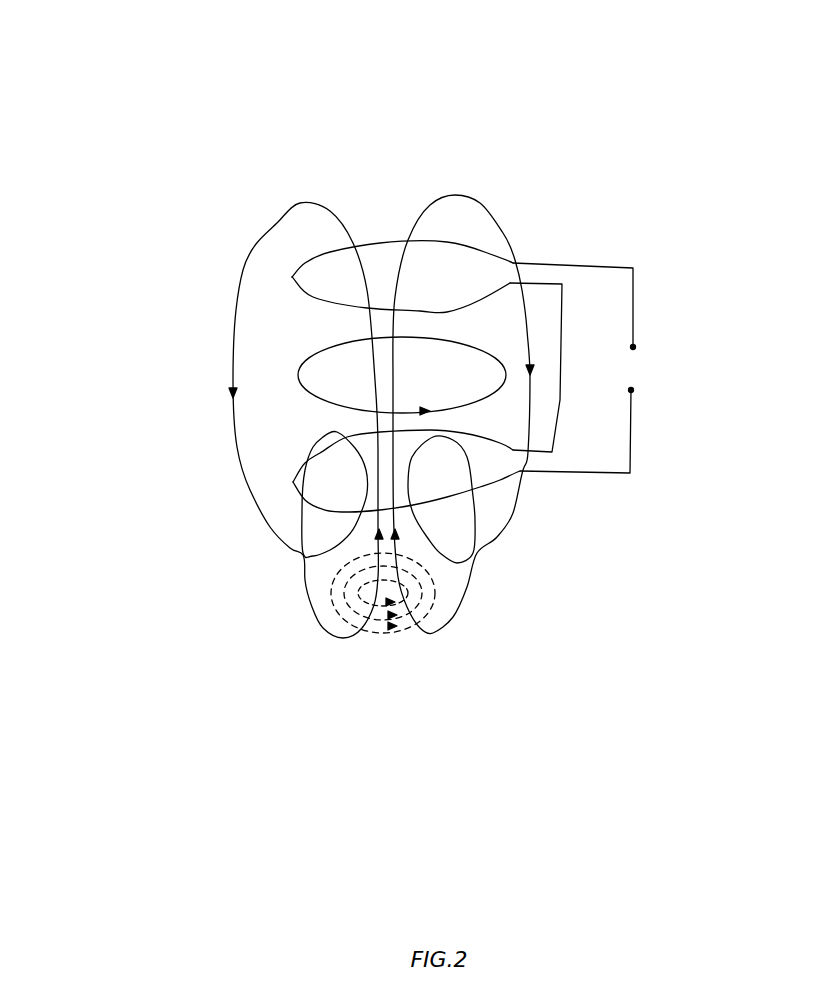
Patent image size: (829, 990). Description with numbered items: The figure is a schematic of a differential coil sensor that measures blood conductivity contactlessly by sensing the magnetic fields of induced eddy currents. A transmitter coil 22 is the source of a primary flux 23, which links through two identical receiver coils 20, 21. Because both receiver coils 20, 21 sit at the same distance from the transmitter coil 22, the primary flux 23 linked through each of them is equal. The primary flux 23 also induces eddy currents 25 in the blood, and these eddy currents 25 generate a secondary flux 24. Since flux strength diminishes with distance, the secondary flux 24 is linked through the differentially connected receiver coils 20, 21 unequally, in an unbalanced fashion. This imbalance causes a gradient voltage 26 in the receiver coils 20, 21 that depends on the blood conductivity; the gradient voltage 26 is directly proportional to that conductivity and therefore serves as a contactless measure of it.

The receiver coil 20 is at (292, 276).
The receiver coil 21 is at (292, 479).
The transmitter coil 22 is at (297, 377).
The primary flux 23 is at (307, 200).
The secondary flux 24 is at (433, 636).
The eddy currents 25 is at (380, 615).
The gradient voltage 26 is at (668, 372).